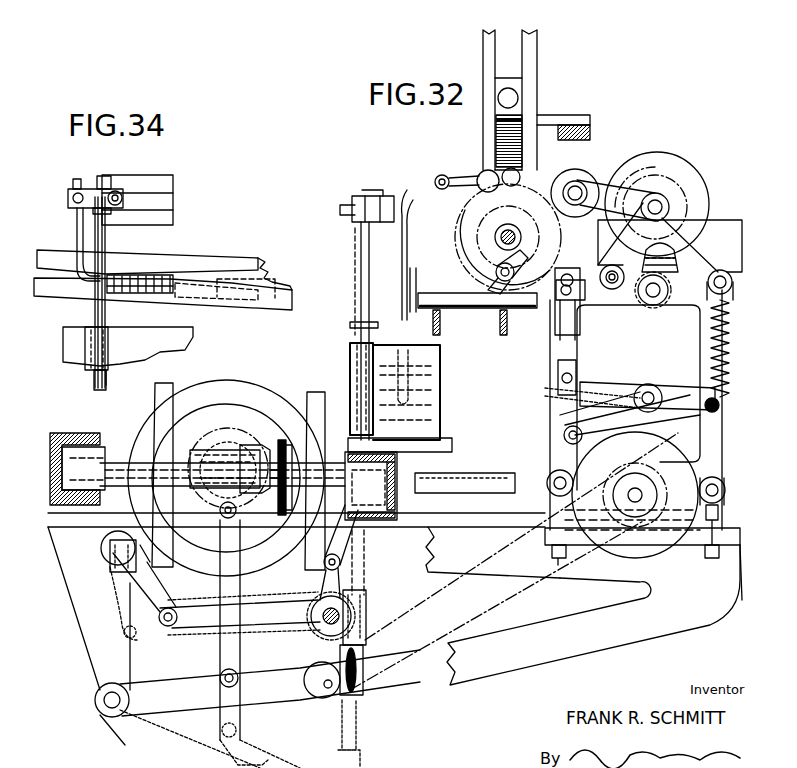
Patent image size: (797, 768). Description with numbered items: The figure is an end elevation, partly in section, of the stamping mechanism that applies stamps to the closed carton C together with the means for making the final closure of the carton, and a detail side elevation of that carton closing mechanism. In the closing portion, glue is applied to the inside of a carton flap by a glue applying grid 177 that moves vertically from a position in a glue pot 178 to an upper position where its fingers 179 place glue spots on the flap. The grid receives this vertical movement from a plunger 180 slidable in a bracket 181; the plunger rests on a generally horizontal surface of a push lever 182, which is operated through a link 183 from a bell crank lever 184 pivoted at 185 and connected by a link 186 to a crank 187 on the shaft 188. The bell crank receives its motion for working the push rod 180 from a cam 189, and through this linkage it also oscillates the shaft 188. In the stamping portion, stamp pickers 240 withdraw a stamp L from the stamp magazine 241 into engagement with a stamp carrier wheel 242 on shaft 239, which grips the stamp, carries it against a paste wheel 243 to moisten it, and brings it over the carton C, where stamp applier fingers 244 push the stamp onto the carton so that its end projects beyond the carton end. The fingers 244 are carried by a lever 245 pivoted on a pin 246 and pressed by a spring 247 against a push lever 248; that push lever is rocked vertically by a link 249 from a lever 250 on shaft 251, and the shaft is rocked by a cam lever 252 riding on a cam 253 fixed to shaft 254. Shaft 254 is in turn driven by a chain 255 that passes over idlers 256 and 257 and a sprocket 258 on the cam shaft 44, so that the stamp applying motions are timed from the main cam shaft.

In FIG. 32, the stamp L is at (543, 102).
In FIG. 32, the carton C is at (440, 292).
In FIG. 32, the cam shaft 44 is at (232, 462).
In FIG. 34, the glue applying grid 177 is at (88, 295).
In FIG. 32, the glue applying grid 177 is at (400, 252).
In FIG. 32, the glue pot 178 is at (440, 374).
In FIG. 34, the fingers 179 is at (167, 278).
In FIG. 34, the plunger 180 is at (105, 304).
In FIG. 32, the plunger 180 is at (362, 283).
In FIG. 32, the bracket 181 is at (350, 383).
In FIG. 32, the push lever 182 is at (312, 700).
In FIG. 32, the link 183 is at (240, 655).
In FIG. 32, the bell crank lever 184 is at (216, 540).
In FIG. 32, the pivot 185 is at (108, 545).
In FIG. 32, the link 186 is at (212, 620).
In FIG. 32, the crank 187 is at (318, 595).
In FIG. 32, the shaft 188 is at (312, 625).
In FIG. 32, the cam 189 is at (250, 390).
In FIG. 32, the shaft 239 is at (500, 232).
In FIG. 32, the stamp pickers 240 is at (473, 176).
In FIG. 32, the stamp magazine 241 is at (481, 128).
In FIG. 32, the stamp carrier wheel 242 is at (528, 256).
In FIG. 32, the paste wheel 243 is at (585, 172).
In FIG. 32, the stamp applier fingers 244 is at (537, 300).
In FIG. 32, the lever 245 is at (556, 303).
In FIG. 32, the pin 246 is at (600, 268).
In FIG. 32, the spring 247 is at (613, 312).
In FIG. 32, the push lever 248 is at (598, 310).
In FIG. 32, the link 249 is at (612, 375).
In FIG. 32, the lever 250 is at (648, 384).
In FIG. 32, the shaft 251 is at (660, 398).
In FIG. 32, the cam lever 252 is at (600, 400).
In FIG. 32, the cam 253 is at (563, 440).
In FIG. 32, the shaft 254 is at (628, 497).
In FIG. 32, the chain 255 is at (447, 577).
In FIG. 32, the idler 256 is at (366, 600).
In FIG. 32, the idler 257 is at (356, 698).
In FIG. 32, the sprocket 258 is at (225, 470).